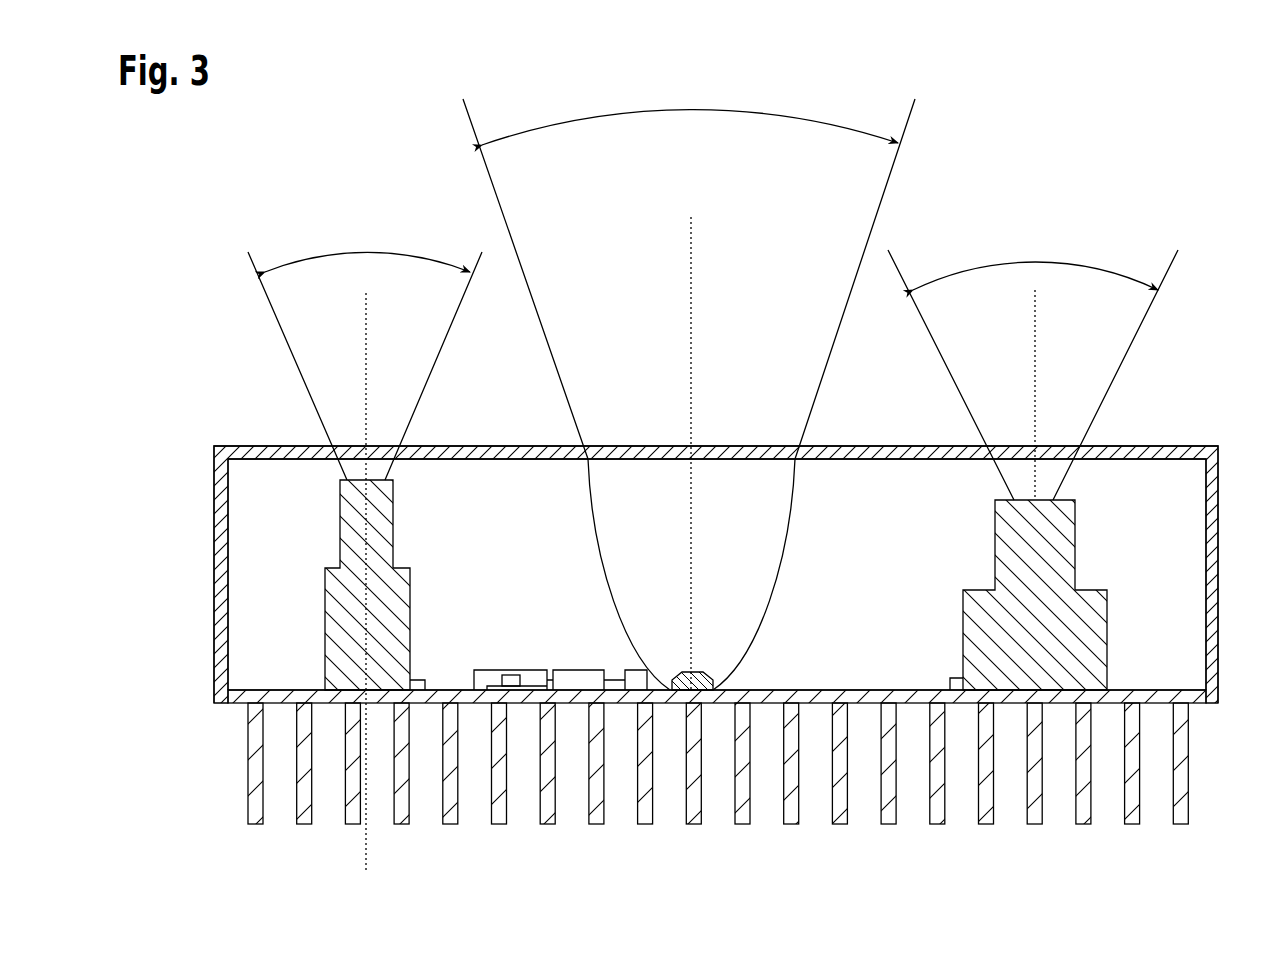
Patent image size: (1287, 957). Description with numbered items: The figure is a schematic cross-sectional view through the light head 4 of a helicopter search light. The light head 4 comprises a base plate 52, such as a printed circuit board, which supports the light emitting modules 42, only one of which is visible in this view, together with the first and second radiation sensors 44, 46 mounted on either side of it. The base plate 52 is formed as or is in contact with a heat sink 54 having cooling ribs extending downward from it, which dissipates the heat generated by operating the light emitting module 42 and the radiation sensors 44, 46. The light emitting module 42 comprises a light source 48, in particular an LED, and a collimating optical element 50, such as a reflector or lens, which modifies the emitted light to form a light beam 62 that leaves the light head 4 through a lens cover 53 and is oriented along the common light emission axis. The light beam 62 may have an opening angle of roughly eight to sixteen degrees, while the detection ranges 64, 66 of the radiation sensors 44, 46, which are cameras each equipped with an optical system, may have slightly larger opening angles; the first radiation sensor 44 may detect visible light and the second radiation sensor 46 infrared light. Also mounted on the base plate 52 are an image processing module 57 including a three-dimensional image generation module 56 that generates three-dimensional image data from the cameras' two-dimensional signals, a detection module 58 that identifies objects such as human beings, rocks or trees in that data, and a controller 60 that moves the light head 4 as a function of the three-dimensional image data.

The light head 4 is at (1215, 192).
The light emitting module 42 is at (798, 520).
The first radiation sensor 44 is at (1057, 577).
The second radiation sensor 46 is at (363, 579).
The light source 48 is at (703, 660).
The optical element 50 is at (732, 574).
The base plate 52 is at (220, 735).
The lens cover 53 is at (1210, 420).
The heat sink 54 is at (1195, 775).
The 3D image generation module 56 is at (512, 677).
The image processing module 57 is at (482, 673).
The detection module 58 is at (570, 675).
The controller 60 is at (633, 673).
The light beam 62 is at (907, 150).
The detection range 64 is at (1180, 265).
The detection range 66 is at (250, 317).